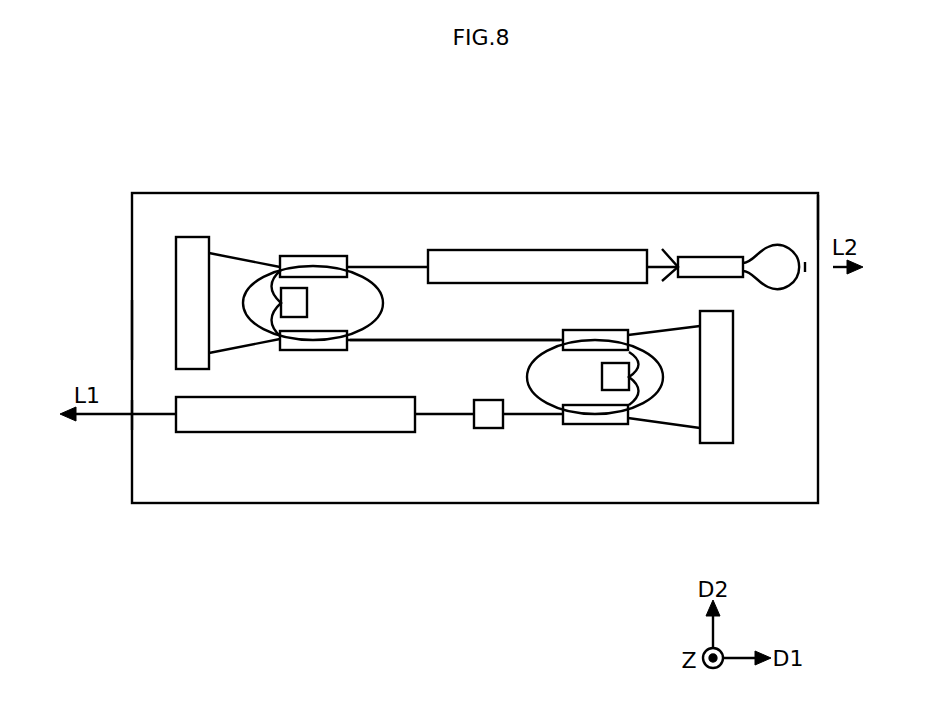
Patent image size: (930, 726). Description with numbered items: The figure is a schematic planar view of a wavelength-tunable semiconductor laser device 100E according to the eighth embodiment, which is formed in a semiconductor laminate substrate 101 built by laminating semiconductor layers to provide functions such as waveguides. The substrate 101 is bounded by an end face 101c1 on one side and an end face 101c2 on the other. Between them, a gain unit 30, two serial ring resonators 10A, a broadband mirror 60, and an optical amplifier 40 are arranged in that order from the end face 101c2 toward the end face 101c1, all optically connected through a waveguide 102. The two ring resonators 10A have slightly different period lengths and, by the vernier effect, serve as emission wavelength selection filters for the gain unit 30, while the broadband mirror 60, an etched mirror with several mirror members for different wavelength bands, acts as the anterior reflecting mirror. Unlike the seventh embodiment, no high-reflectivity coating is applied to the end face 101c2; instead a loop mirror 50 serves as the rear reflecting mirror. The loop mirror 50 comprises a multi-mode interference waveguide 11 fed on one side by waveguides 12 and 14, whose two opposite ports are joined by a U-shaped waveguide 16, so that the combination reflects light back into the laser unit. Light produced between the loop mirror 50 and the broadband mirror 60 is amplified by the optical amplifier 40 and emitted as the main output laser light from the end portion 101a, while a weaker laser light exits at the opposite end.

The laser device 100E is at (775, 193).
The semiconductor laminate substrate 101 is at (788, 458).
The end portion 101a is at (132, 414).
The end face 101c1 is at (132, 330).
The end face 101c2 is at (820, 207).
The ring resonator 10A is at (282, 236).
The multi-mode interference waveguide 11 is at (337, 330).
The waveguide 12 is at (406, 267).
The waveguide 14 is at (668, 250).
The U-shaped waveguide 16 is at (806, 267).
The gain unit 30 is at (548, 250).
The optical amplifier 40 is at (275, 432).
The loop mirror 50 is at (786, 233).
The broadband mirror 60 is at (490, 428).
The waveguide 102 is at (378, 343).